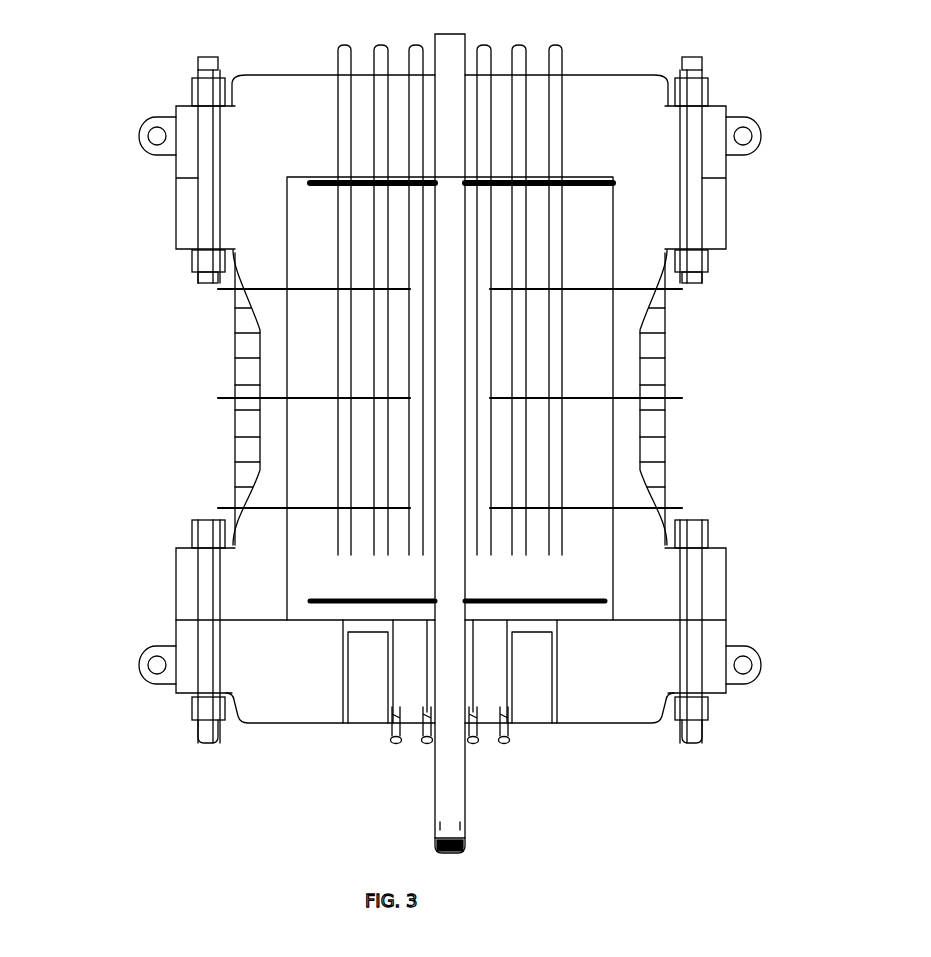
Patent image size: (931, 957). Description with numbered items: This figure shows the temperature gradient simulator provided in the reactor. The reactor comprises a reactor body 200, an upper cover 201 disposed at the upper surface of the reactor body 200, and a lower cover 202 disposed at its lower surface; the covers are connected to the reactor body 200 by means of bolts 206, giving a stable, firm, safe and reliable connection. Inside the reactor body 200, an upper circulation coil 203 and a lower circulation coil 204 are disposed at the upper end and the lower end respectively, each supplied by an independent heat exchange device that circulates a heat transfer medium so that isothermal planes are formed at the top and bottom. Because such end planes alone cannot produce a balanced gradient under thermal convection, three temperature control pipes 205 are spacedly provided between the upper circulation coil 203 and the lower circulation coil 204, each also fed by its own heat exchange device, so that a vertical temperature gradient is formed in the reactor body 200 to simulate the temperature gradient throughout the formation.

The reactor body 200 is at (268, 253).
The upper cover 201 is at (187, 152).
The lower cover 202 is at (190, 658).
The upper circulation coil 203 is at (611, 196).
The lower circulation coil 204 is at (615, 597).
The temperature control pipe 205 is at (195, 289).
The bolt 206 is at (690, 137).